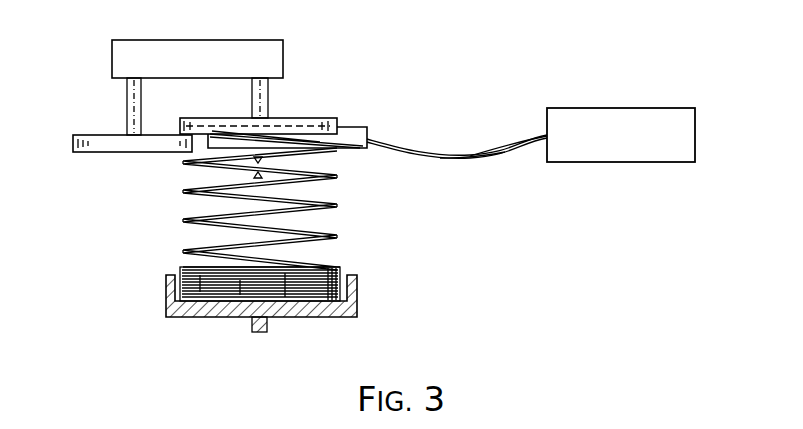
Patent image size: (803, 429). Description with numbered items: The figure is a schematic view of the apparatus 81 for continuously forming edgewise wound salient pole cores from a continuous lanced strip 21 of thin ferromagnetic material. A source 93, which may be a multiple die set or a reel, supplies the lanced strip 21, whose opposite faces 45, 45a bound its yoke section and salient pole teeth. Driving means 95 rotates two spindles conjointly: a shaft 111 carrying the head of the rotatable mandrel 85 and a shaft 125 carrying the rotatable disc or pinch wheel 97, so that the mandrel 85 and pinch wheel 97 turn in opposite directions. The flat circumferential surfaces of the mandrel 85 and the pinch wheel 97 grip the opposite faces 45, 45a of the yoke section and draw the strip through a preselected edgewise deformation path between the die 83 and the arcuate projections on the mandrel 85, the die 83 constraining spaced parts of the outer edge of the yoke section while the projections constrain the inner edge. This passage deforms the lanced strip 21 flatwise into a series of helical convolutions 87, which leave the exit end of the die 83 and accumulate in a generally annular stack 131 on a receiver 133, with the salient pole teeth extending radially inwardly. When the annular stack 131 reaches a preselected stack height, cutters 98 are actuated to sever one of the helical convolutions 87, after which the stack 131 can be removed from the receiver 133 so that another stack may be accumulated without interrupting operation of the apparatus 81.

The lanced strip 21 is at (433, 152).
The face 45 is at (505, 158).
The opposite face 45a is at (500, 148).
The apparatus 81 is at (441, 229).
The die 83 is at (400, 108).
The rotatable mandrel 85 is at (310, 115).
The helical convolutions 87 is at (186, 190).
The source 93 is at (639, 139).
The driving means 95 is at (206, 66).
The pinch wheel 97 is at (88, 130).
The cutters 98 is at (263, 160).
The shaft 111 is at (262, 97).
The shaft 125 is at (130, 103).
The annular stack 131 is at (341, 275).
The receiver 133 is at (206, 318).